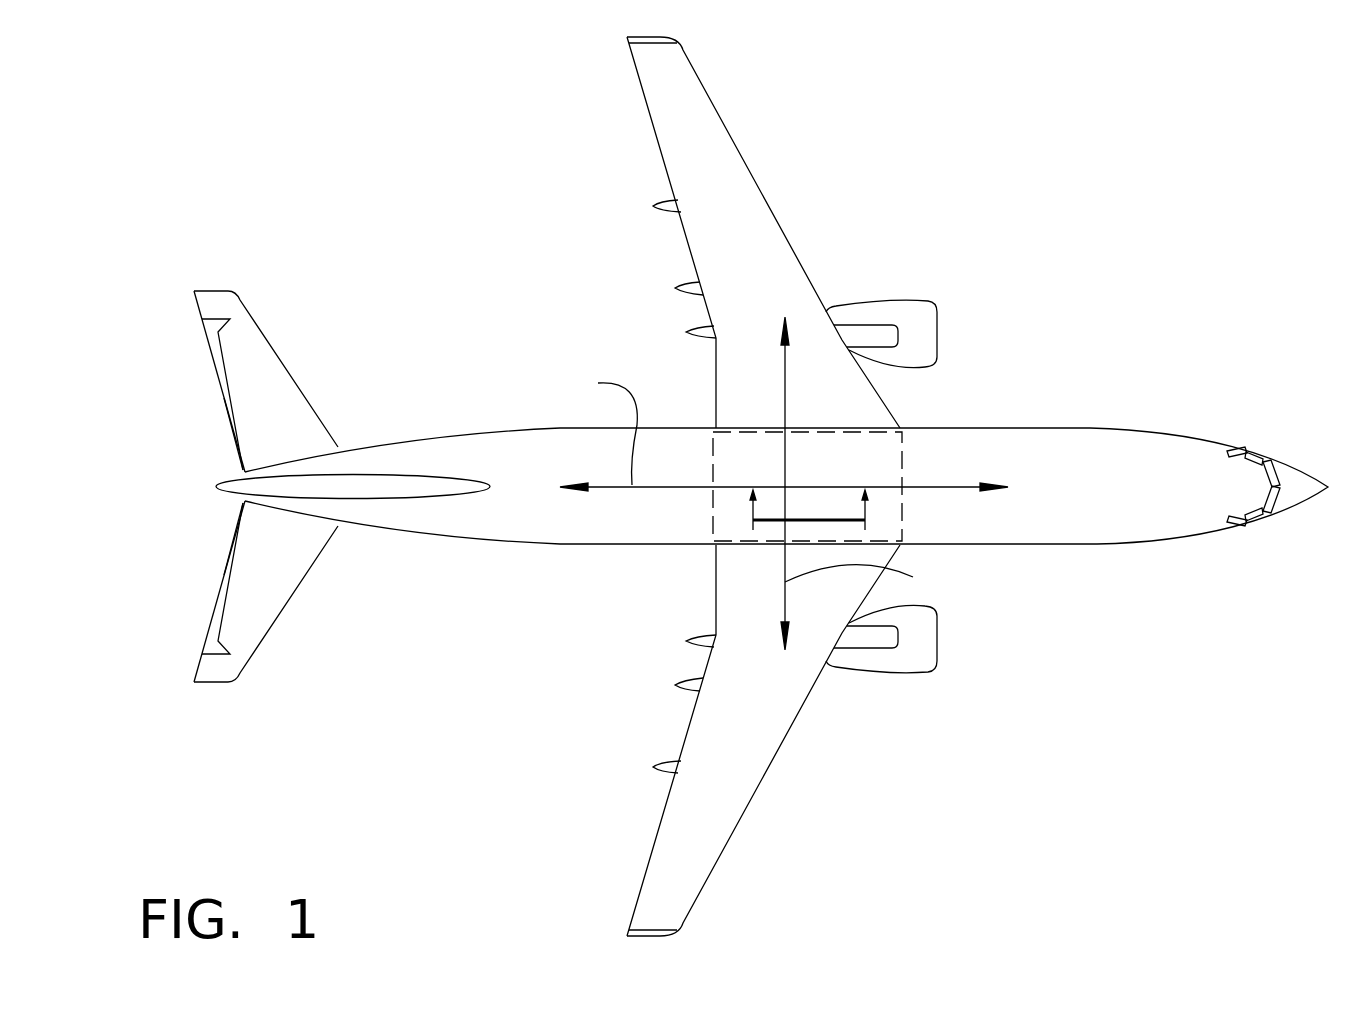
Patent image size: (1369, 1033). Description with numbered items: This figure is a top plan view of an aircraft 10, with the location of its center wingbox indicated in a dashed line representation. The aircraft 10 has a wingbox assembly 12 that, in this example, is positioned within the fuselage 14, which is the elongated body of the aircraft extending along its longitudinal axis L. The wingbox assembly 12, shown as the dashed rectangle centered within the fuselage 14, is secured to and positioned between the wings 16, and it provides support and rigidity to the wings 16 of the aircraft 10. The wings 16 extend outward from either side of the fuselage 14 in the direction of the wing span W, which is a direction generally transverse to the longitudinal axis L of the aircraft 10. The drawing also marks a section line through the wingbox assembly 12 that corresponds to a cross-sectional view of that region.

The aircraft 10 is at (761, 486).
The wingbox assembly 12 is at (902, 473).
The fuselage 14 is at (1130, 498).
The wings 16 is at (757, 250).